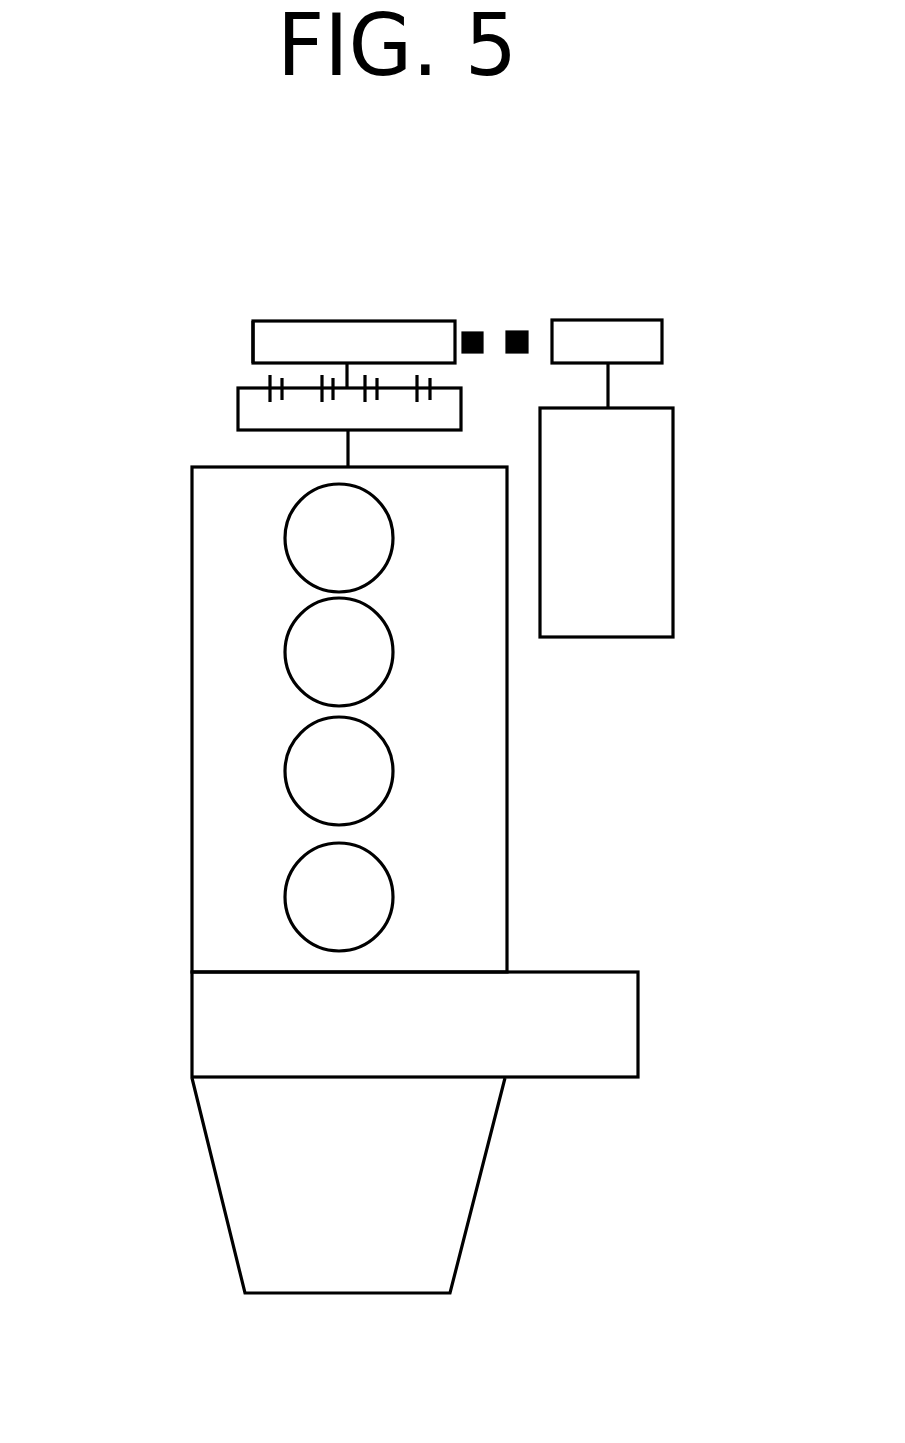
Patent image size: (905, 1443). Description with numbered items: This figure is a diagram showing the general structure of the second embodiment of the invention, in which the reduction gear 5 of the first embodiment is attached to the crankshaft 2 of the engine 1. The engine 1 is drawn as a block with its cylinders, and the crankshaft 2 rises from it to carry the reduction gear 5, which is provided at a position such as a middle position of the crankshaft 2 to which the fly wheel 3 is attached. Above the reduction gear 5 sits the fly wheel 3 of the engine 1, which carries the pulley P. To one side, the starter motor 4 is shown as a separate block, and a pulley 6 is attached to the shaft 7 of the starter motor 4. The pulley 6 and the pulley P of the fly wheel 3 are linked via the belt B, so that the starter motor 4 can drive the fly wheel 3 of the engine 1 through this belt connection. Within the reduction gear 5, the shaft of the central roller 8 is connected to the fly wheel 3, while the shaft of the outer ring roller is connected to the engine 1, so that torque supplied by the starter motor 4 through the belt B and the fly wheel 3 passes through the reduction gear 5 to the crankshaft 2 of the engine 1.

The engine 1 is at (198, 750).
The crankshaft 2 is at (186, 440).
The fly wheel 3 is at (357, 320).
The pulley P is at (252, 335).
The central roller 8 is at (342, 387).
The reduction gear 5 is at (238, 405).
The belt B is at (517, 332).
The pulley 6 is at (638, 320).
The shaft 7 is at (608, 383).
The starter motor 4 is at (657, 498).